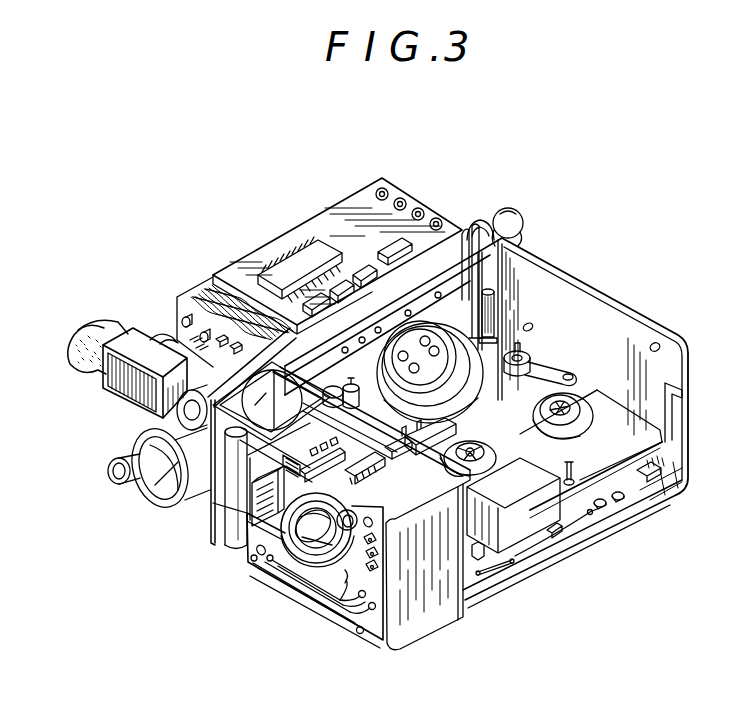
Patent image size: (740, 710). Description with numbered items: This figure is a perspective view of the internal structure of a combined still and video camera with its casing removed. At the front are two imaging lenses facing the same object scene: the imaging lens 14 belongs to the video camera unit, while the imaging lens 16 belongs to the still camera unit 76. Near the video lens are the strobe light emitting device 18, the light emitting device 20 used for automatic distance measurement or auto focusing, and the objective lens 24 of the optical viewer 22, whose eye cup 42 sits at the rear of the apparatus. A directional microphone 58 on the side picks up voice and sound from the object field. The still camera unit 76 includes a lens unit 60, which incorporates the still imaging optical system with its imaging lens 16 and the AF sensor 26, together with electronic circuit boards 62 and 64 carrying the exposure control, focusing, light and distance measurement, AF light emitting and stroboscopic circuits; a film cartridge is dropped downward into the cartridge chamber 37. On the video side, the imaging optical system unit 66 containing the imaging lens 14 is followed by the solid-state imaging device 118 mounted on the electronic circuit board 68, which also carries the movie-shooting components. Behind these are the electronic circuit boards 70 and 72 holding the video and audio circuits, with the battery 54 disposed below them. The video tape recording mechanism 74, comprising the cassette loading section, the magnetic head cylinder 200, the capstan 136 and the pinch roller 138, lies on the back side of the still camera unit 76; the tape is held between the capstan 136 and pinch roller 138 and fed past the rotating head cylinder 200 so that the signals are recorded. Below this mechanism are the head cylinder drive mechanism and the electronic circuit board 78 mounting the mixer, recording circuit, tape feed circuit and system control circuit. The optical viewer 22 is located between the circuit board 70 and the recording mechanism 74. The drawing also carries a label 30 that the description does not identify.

The imaging lens 14 is at (150, 500).
The imaging lens 16 is at (302, 584).
The strobe light emitting device 18 is at (120, 390).
The light emitting device 20 is at (108, 482).
The optical viewer 22 is at (486, 224).
The objective lens 24 is at (178, 416).
The AF sensor 26 is at (318, 588).
The drive pulley 30 is at (474, 457).
The cartridge chamber 37 is at (289, 398).
The eye cup 42 is at (521, 232).
The battery 54 is at (475, 224).
The microphone 58 is at (84, 340).
The lens unit 60 is at (243, 546).
The electronic circuit board 62 is at (369, 641).
The electronic circuit board 64 is at (428, 560).
The imaging optical system unit 66 is at (186, 506).
The electronic circuit board 68 is at (177, 297).
The electronic circuit board 70 is at (254, 261).
The electronic circuit board 72 is at (462, 234).
The video tape recording mechanism 74 is at (567, 331).
The still camera unit 76 is at (264, 590).
The electronic circuit board 78 is at (640, 498).
The solid-state imaging device 118 is at (180, 342).
The capstan 136 is at (498, 323).
The pinch roller 138 is at (533, 363).
The head cylinder 200 is at (492, 295).